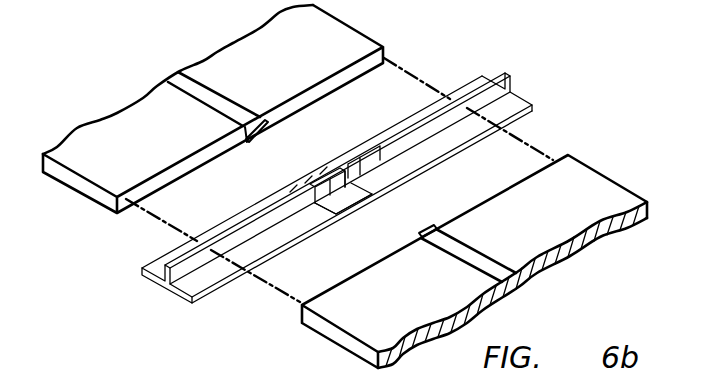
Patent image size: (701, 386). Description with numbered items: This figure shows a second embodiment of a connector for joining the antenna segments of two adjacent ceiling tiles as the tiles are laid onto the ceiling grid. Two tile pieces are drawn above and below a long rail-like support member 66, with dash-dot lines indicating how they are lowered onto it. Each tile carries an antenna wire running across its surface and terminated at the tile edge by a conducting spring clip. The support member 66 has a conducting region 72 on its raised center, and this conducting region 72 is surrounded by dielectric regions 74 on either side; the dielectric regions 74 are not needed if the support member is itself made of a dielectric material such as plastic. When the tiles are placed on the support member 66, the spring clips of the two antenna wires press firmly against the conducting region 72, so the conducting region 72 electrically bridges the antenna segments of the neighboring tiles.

The support member 66 is at (505, 78).
The conducting region 72 is at (330, 166).
The dielectric region 74 is at (370, 186).